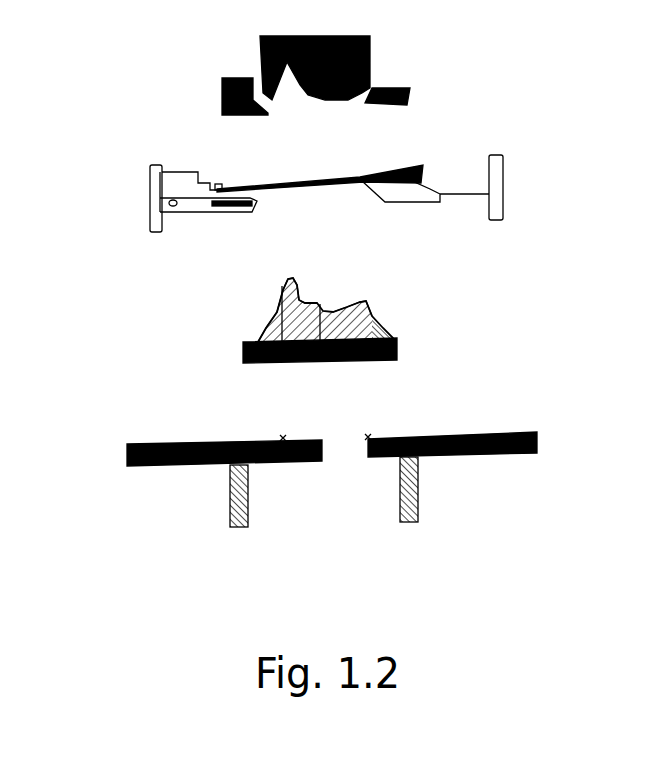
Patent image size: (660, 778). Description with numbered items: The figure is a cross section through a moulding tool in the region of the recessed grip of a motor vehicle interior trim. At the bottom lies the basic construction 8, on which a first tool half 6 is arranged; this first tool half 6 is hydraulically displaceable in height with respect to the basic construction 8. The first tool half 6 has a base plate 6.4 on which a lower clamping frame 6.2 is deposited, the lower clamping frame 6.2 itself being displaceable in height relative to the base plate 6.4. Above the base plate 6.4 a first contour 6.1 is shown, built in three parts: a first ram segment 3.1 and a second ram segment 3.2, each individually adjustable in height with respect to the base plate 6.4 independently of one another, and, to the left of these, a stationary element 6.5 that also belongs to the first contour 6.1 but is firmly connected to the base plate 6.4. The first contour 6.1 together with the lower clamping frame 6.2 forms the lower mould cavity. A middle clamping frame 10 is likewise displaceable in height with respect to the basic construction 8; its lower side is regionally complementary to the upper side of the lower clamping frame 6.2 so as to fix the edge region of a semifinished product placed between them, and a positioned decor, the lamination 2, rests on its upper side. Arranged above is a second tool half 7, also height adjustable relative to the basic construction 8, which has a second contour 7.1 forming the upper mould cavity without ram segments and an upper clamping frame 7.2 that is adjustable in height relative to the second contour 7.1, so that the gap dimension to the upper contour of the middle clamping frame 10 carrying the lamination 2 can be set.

The lamination 2 is at (425, 180).
The first ram segment 3.1 is at (349, 342).
The second ram segment 3.2 is at (308, 302).
The first tool half 6 is at (157, 310).
The first contour 6.1 is at (354, 294).
The lower clamping frame 6.2 is at (266, 333).
The base plate 6.4 is at (397, 351).
The stationary element 6.5 is at (275, 300).
The second tool half 7 is at (183, 80).
The second contour 7.1 is at (333, 100).
The upper clamping frame 7.2 is at (408, 92).
The basic construction 8 is at (467, 457).
The middle clamping frame 10 is at (503, 195).